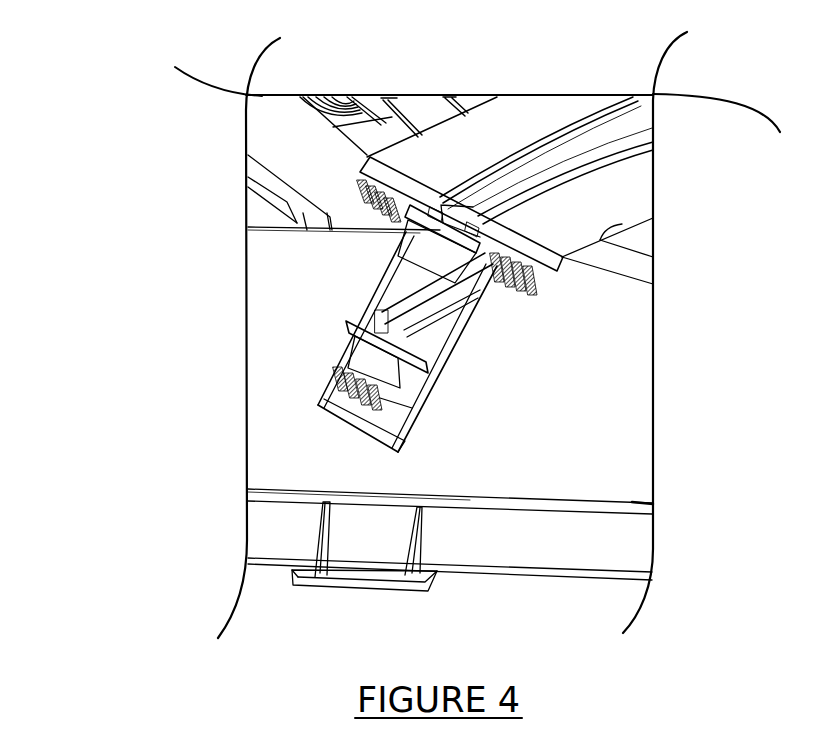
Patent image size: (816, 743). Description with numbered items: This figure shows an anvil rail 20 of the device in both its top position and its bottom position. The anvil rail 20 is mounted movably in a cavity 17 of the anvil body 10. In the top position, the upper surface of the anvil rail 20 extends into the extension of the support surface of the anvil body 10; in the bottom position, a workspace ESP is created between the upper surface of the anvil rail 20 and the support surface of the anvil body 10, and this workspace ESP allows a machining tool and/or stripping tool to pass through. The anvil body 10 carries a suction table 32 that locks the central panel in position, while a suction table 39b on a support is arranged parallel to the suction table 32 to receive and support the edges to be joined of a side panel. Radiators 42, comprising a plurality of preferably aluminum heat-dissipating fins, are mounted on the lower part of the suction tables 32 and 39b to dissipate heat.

The anvil body 10 is at (627, 368).
The cavity 17 is at (393, 407).
The anvil rail 20 is at (435, 247).
The suction table 32 is at (623, 193).
The suction table 39b is at (448, 143).
The radiator 42 is at (357, 189).
The workspace ESP is at (405, 287).